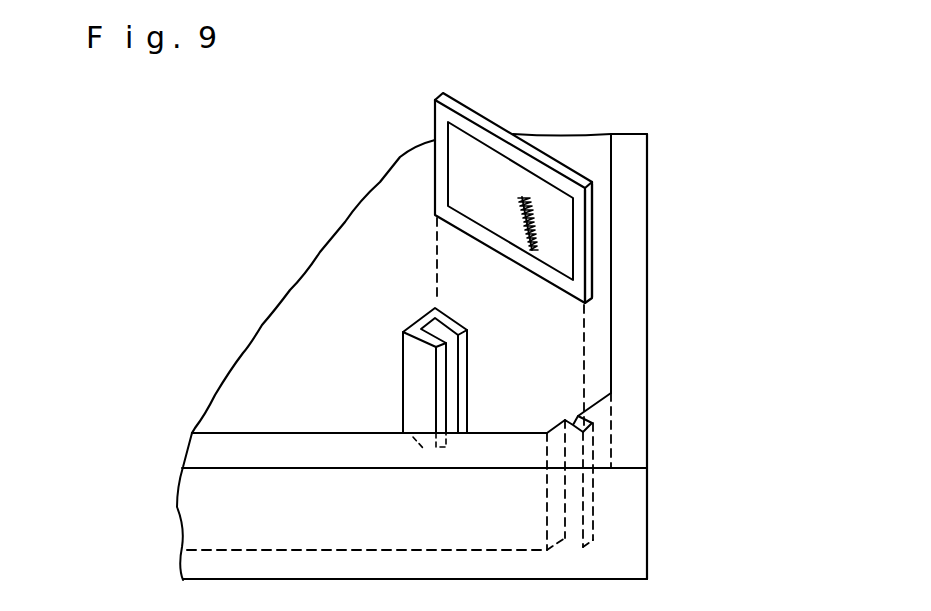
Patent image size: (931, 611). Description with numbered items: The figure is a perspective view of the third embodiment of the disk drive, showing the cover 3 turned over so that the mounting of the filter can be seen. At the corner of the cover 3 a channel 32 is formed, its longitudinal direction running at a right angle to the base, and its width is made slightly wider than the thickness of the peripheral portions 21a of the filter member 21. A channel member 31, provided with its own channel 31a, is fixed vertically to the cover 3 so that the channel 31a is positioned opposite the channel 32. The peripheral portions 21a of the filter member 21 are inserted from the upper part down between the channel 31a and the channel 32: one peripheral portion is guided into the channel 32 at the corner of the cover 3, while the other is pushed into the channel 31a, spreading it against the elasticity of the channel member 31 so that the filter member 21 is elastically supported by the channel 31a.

The cover 3 is at (648, 543).
The filter member 21 is at (599, 261).
The peripheral portions 21a is at (585, 259).
The channel member 31 is at (581, 378).
The channel 31a is at (452, 388).
The channel 32 is at (570, 490).